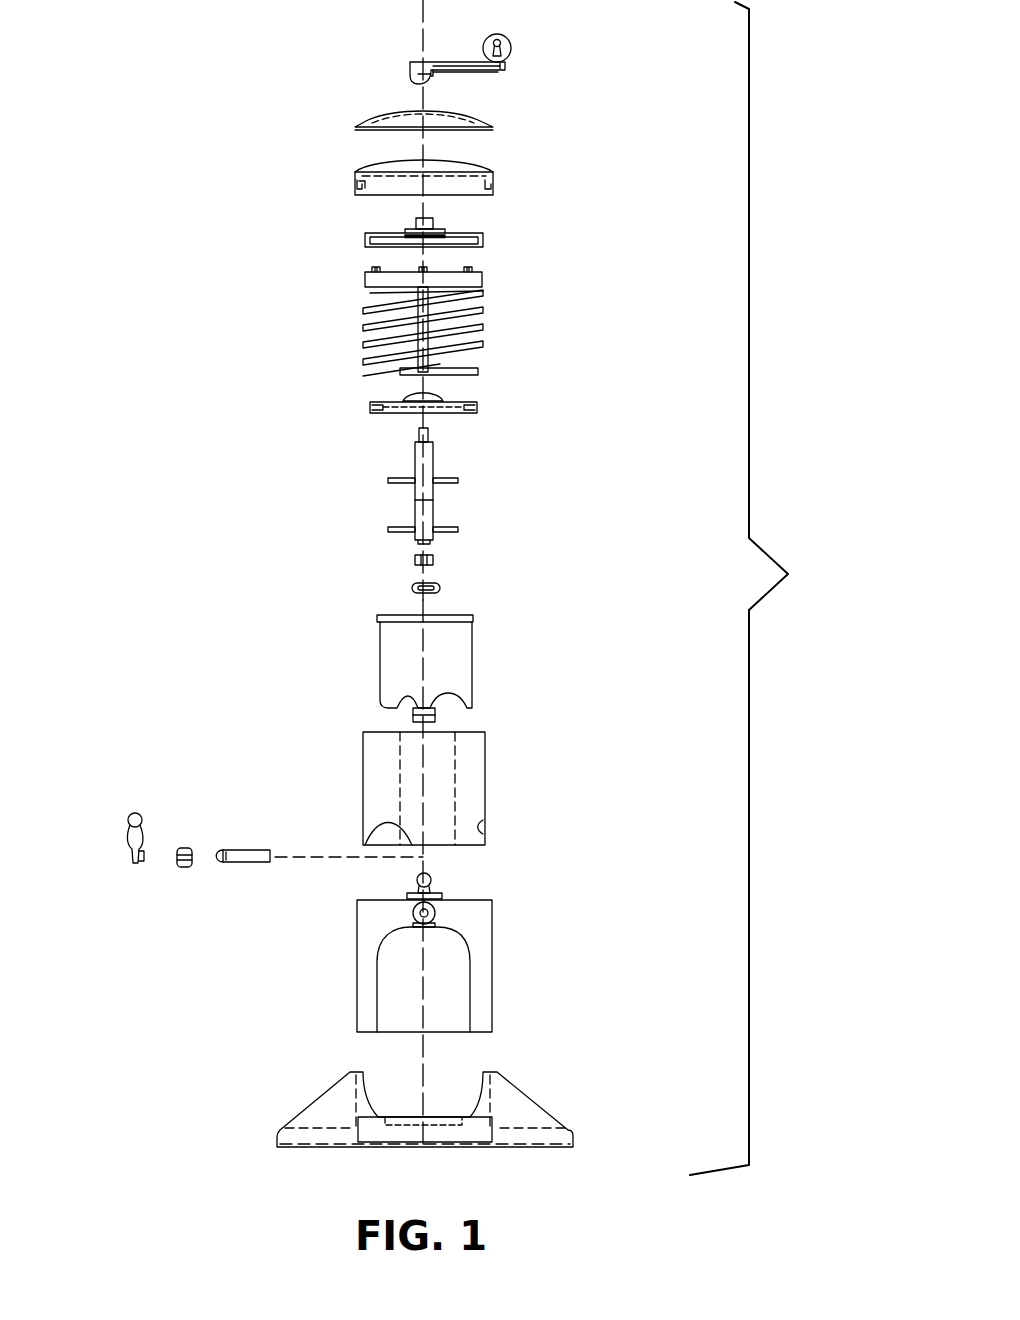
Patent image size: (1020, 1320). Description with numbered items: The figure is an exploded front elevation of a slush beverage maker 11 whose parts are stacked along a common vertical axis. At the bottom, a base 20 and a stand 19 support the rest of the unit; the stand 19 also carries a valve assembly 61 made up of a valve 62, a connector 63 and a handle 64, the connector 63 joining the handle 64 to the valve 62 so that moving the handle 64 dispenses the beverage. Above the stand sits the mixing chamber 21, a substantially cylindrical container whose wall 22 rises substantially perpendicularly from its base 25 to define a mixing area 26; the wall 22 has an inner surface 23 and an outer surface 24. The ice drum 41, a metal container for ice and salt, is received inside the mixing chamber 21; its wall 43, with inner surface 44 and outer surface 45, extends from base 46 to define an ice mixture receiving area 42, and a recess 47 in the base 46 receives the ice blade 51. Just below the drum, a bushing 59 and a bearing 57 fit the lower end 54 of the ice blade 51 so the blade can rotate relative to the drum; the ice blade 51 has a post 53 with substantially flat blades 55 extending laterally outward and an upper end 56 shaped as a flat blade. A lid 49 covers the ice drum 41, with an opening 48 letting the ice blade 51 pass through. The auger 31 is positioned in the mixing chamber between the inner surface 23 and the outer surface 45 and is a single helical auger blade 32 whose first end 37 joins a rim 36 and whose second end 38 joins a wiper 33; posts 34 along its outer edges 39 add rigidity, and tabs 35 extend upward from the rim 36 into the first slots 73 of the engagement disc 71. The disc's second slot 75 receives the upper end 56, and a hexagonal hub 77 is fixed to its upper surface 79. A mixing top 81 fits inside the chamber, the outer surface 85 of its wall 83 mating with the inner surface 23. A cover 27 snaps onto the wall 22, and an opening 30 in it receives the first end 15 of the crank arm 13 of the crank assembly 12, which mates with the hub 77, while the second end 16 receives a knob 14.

The slush beverage maker 11 is at (148, 636).
The crank assembly 12 is at (396, 57).
The crank arm 13 is at (455, 73).
The knob 14 is at (512, 46).
The first end of crank arm 15 is at (431, 76).
The second end of crank arm 16 is at (506, 68).
The stand 19 is at (357, 986).
The base 20 is at (553, 1113).
The mixing chamber 21 is at (428, 774).
The wall 22 is at (365, 736).
The inner surface 23 is at (470, 830).
The outer surface 24 is at (365, 780).
The base of the mixing chamber 25 is at (405, 845).
The mixing area 26 is at (433, 760).
The cover 27 is at (400, 117).
The opening 30 is at (368, 93).
The auger 31 is at (399, 318).
The auger blade 32 is at (450, 293).
The wiper 33 is at (478, 371).
The posts 34 is at (425, 331).
The tabs 35 is at (378, 268).
The rim 36 is at (483, 279).
The first end of auger blade 37 is at (433, 291).
The second end of auger blade 38 is at (385, 372).
The outer edges of auger blade 39 is at (380, 350).
The ice drum 41 is at (432, 668).
The ice mixture receiving area 42 is at (385, 683).
The ice drum wall 43 is at (473, 660).
The inner surface of ice drum wall 44 is at (472, 650).
The outer surface of ice drum wall 45 is at (473, 680).
The base of the ice drum 46 is at (382, 705).
The recess 47 is at (470, 705).
The opening 48 is at (405, 395).
The lid 49 is at (478, 408).
The ice blade 51 is at (426, 483).
The post 53 is at (415, 460).
The lower end of ice blade 54 is at (457, 533).
The flat blades 55 is at (390, 480).
The upper end of post 56 is at (430, 436).
The bearing 57 is at (412, 588).
The bushing 59 is at (435, 560).
The valve assembly 61 is at (456, 912).
The valve 62 is at (250, 863).
The connector 63 is at (182, 848).
The handle 64 is at (135, 863).
The engagement disc 71 is at (442, 217).
The first slots 73 is at (450, 231).
The second slot 75 is at (413, 253).
The hub 77 is at (414, 242).
The upper surface 79 is at (460, 230).
The mixing top 81 is at (417, 169).
The wall 83 is at (358, 181).
The outer surface 85 is at (355, 190).